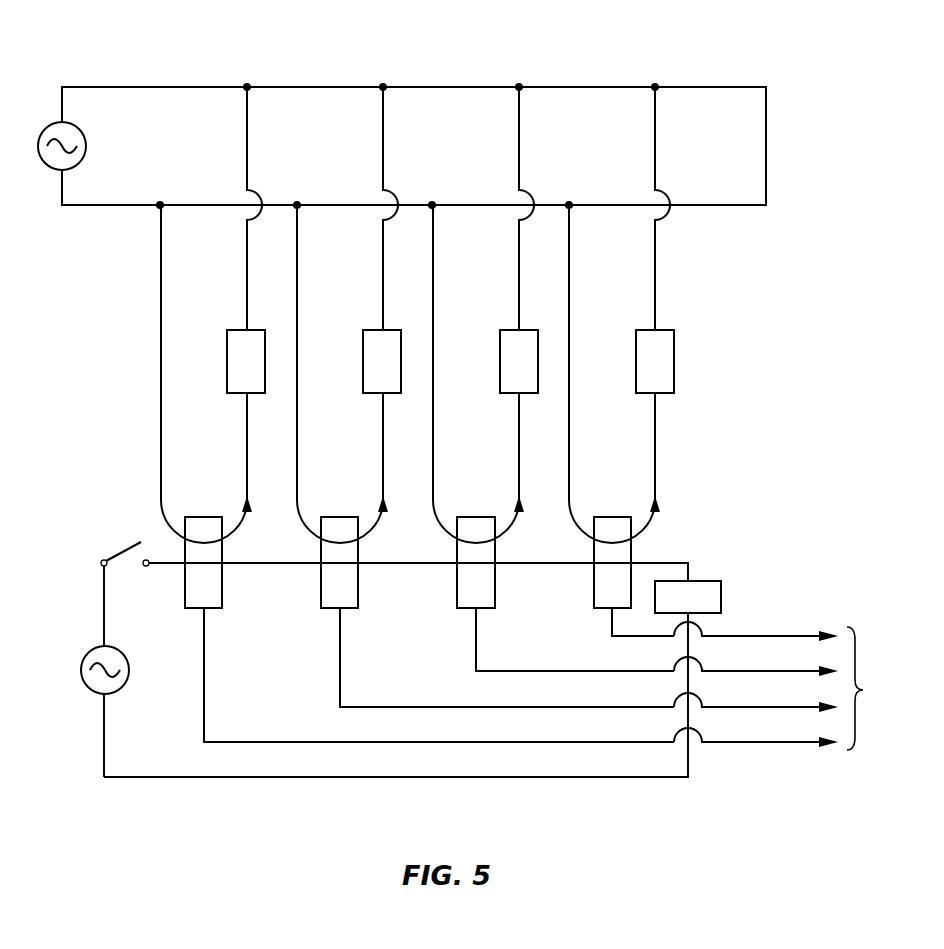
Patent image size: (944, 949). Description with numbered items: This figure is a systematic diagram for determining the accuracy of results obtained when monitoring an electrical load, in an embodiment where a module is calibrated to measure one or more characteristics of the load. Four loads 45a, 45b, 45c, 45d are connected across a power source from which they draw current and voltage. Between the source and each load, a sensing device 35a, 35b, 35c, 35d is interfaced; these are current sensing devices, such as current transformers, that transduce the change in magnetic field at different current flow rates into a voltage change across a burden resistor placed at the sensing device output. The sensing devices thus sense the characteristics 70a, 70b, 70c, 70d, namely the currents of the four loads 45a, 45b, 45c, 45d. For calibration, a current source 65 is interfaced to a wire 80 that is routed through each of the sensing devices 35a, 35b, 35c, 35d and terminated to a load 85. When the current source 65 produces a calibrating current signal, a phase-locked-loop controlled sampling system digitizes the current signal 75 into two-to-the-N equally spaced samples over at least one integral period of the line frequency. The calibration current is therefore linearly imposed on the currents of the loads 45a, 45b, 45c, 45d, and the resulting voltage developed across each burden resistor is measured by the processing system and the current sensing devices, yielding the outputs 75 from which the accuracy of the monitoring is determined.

The load 45a is at (247, 362).
The load 45b is at (383, 362).
The load 45c is at (519, 362).
The load 45d is at (655, 362).
The characteristic 70a is at (163, 522).
The characteristic 70b is at (299, 530).
The characteristic 70c is at (436, 530).
The characteristic 70d is at (572, 530).
The sensing device 35a is at (204, 587).
The sensing device 35b is at (340, 587).
The sensing device 35c is at (476, 587).
The sensing device 35d is at (612, 587).
The current source 65 is at (80, 670).
The load 85 is at (722, 597).
The current signal 75 is at (785, 686).
The wire 80 is at (583, 778).